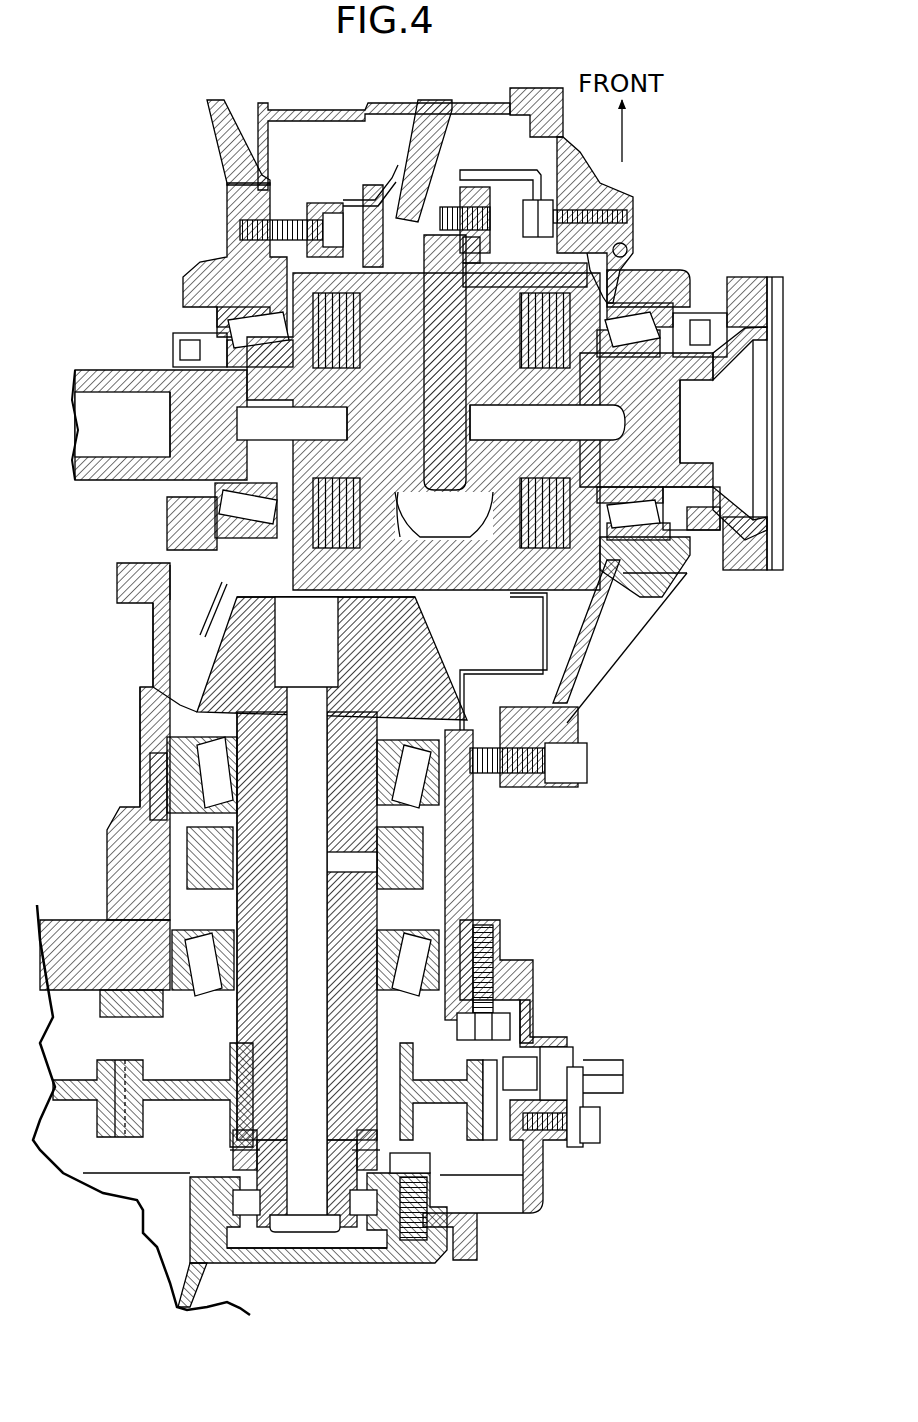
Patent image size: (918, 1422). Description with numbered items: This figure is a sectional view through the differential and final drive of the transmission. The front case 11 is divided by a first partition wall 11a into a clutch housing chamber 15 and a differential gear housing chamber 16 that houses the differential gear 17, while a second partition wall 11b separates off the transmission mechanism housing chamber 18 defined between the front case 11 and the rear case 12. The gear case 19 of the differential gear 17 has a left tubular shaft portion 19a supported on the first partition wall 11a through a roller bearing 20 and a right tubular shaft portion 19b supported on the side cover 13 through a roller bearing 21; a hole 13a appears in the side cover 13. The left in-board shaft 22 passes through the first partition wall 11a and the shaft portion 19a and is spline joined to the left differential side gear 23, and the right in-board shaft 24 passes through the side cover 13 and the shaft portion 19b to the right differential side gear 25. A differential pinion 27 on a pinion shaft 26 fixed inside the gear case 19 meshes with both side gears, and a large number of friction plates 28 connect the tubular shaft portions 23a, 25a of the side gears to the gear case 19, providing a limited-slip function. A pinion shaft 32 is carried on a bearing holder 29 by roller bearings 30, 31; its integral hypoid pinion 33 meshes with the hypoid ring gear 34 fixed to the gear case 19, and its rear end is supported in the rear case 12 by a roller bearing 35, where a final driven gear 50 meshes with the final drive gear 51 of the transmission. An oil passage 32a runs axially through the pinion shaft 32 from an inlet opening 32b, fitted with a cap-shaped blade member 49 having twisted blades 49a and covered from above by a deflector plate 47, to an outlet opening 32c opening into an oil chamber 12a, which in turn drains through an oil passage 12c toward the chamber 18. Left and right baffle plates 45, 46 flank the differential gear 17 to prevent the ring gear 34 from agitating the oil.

The front case 11 is at (368, 106).
The first partition wall 11a is at (140, 727).
The second partition wall 11b is at (72, 922).
The rear case 12 is at (302, 1266).
The oil chamber 12a is at (277, 1248).
The oil passage 12c is at (390, 1248).
The side cover 13 is at (621, 190).
The cover hole 13a is at (627, 246).
The clutch housing chamber 15 is at (68, 588).
The differential gear housing chamber 16 is at (197, 613).
The differential gear 17 is at (560, 629).
The transmission mechanism housing chamber 18 is at (84, 1151).
The gear case 19 is at (358, 270).
The tubular shaft portion 19a is at (257, 368).
The tubular shaft portion 19b is at (553, 420).
The roller bearing 20 is at (250, 320).
The roller bearing 21 is at (641, 327).
The in-board shaft 22 is at (127, 372).
The differential side gear 23 is at (403, 513).
The tubular shaft portion 23a is at (240, 473).
The in-board shaft 24 is at (743, 288).
The differential side gear 25 is at (479, 511).
The tubular shaft portion 25a is at (657, 440).
The pinion shaft 26 is at (453, 427).
The differential pinion 27 is at (380, 422).
The friction plates 28 is at (335, 378).
The bearing holder 29 is at (167, 860).
The roller bearing 30 is at (205, 777).
The roller bearing 31 is at (190, 980).
The pinion shaft 32 is at (383, 907).
The oil passage 32a is at (287, 1023).
The inlet opening 32b is at (268, 600).
The outlet opening 32c is at (335, 1224).
The hypoid pinion 33 is at (193, 677).
The hypoid ring gear 34 is at (437, 137).
The roller bearing 35 is at (240, 1198).
The left baffle plate 45 is at (383, 175).
The right baffle plate 46 is at (477, 160).
The deflector plate 47 is at (210, 605).
The blade member 49 is at (313, 630).
The twisted blade 49a is at (318, 606).
The final driven gear 50 is at (197, 1097).
The final drive gear 51 is at (76, 1083).